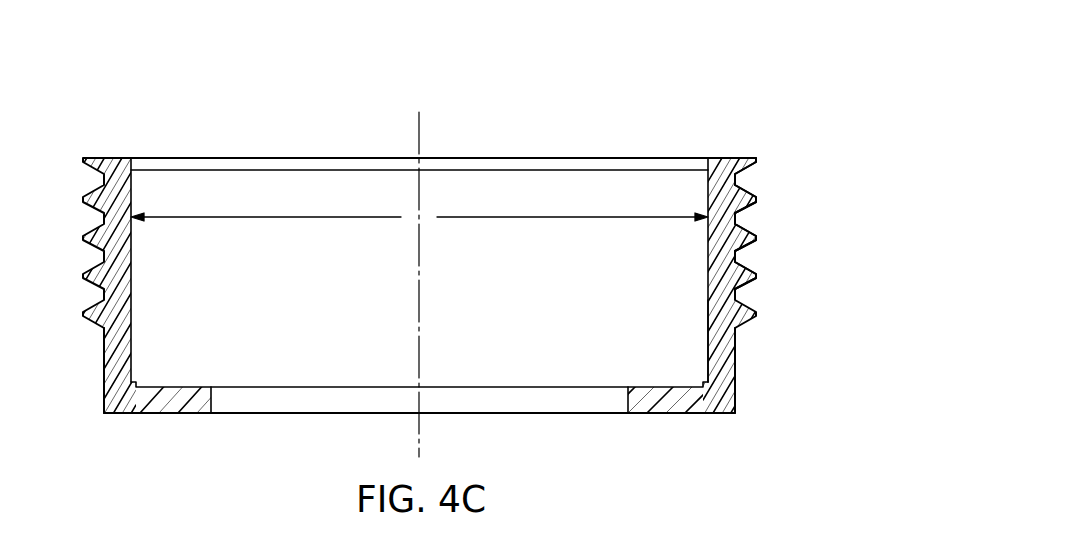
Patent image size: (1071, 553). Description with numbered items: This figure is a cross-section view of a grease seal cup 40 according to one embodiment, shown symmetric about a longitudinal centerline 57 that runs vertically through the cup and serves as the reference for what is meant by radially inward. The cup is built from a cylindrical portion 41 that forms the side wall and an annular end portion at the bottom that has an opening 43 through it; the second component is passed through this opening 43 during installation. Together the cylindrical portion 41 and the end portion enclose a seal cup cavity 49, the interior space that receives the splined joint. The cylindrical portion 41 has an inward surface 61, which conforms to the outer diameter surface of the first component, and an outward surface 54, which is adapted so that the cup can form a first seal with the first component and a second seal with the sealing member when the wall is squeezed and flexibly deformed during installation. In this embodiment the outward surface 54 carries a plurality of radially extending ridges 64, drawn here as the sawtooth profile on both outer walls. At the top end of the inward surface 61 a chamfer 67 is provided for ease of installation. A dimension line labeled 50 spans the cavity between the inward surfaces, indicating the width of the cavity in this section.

The grease seal cup 40 is at (640, 90).
The cylindrical portion 41 is at (108, 358).
The opening 43 is at (508, 407).
The seal cup cavity 49 is at (447, 279).
The inner diameter 50 is at (419, 218).
The outward surface 54 is at (729, 360).
The longitudinal centerline 57 is at (419, 308).
The inward surface 61 is at (708, 328).
The ridges 64 is at (757, 198).
The chamfer 67 is at (709, 162).